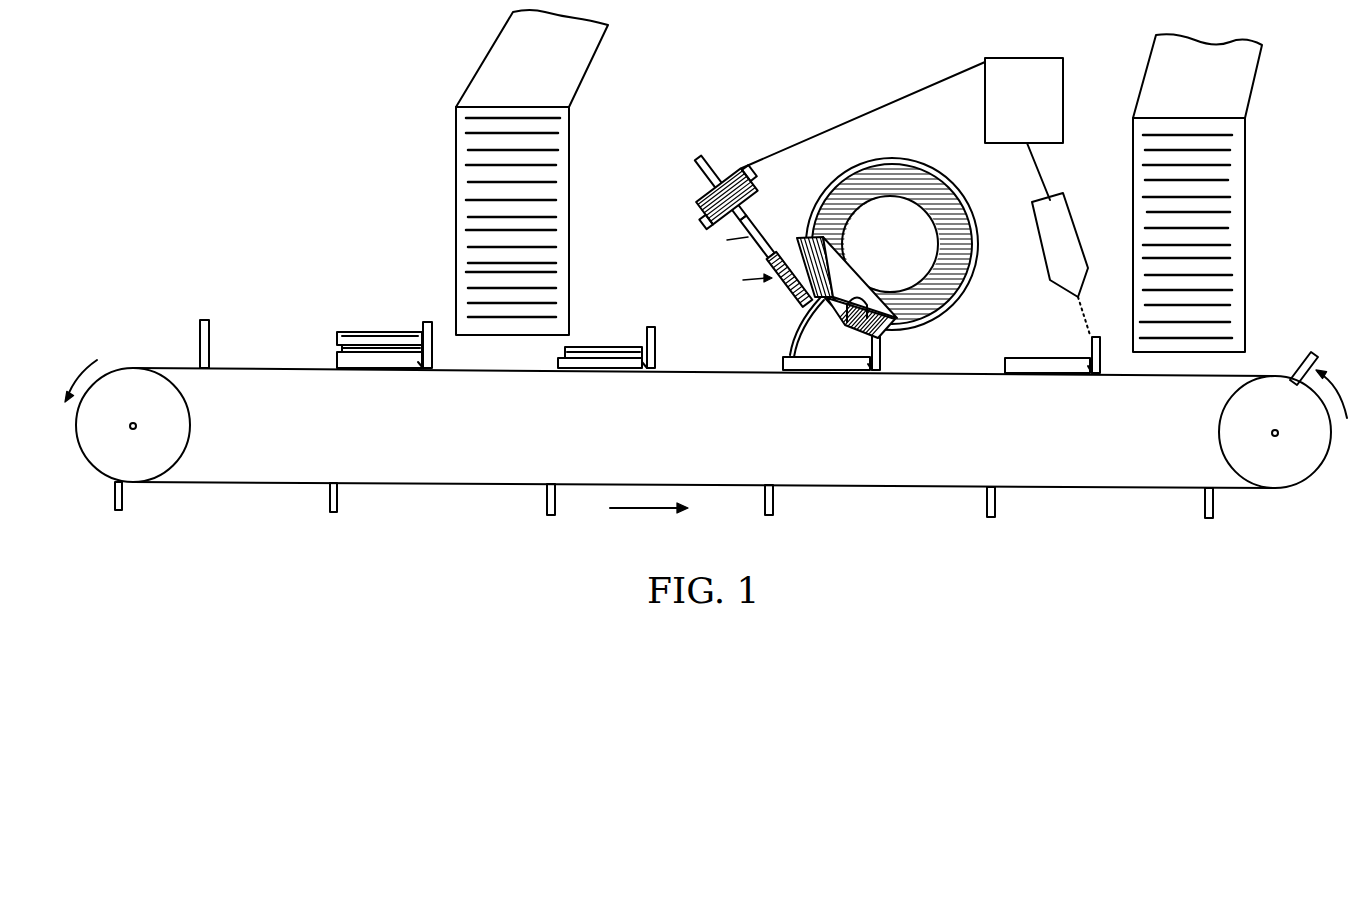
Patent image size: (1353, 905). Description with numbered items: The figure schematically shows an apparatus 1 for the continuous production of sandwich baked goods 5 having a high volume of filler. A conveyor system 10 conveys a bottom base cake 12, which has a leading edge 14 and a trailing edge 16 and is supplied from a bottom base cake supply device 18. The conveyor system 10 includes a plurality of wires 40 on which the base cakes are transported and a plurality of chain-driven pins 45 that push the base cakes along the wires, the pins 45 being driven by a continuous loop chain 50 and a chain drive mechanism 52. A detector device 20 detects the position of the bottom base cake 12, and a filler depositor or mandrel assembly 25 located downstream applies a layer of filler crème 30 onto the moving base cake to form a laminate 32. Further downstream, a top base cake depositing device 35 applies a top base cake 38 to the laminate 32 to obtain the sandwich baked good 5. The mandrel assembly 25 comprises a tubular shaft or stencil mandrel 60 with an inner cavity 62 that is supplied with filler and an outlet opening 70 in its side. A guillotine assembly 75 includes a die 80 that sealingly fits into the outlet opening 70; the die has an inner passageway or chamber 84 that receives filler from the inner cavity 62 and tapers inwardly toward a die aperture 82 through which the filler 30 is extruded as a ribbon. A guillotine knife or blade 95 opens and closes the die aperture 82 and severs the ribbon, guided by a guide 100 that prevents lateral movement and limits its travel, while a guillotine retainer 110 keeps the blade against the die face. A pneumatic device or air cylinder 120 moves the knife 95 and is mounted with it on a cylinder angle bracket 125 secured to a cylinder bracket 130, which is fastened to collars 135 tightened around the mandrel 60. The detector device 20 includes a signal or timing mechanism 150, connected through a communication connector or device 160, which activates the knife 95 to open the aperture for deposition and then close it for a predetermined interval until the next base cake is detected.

The apparatus 1 is at (823, 52).
The sandwich baked goods 5 is at (358, 328).
The conveyor system 10 is at (689, 423).
The bottom base cake 12 is at (333, 360).
The leading edge 14 is at (333, 370).
The trailing edge 16 is at (420, 368).
The bottom base cake supply device 18 is at (1247, 182).
The detector device 20 is at (1075, 207).
The filler depositor or mandrel assembly 25 is at (739, 279).
The filler or filler crème 30 is at (337, 347).
The laminate 32 is at (577, 337).
The top base cake depositing device 35 is at (457, 163).
The top base cake 38 is at (473, 115).
The wires 40 is at (962, 377).
The chain-driven pins 45 is at (212, 333).
The continuous loop chain 50 is at (681, 463).
The chain drive mechanism 52 is at (1317, 507).
The tubular shaft or stencil mandrel 60 is at (940, 302).
The inner cavity 62 is at (906, 226).
The outlet opening 70 is at (845, 290).
The guillotine assembly 75 is at (780, 240).
The die 80 is at (775, 207).
The die aperture 82 is at (813, 307).
The inner passageway or chamber 84 is at (858, 322).
The guillotine knife or blade 95 is at (722, 242).
The guide 100 is at (787, 283).
The guillotine retainer 110 is at (787, 282).
The pneumatic device or air cylinder 120 is at (700, 207).
The cylinder angle bracket 125 is at (730, 165).
The cylinder bracket 130 is at (703, 163).
The collars 135 is at (878, 157).
The signal or timing mechanism 150 is at (1025, 57).
The communication connector or device 160 is at (888, 110).